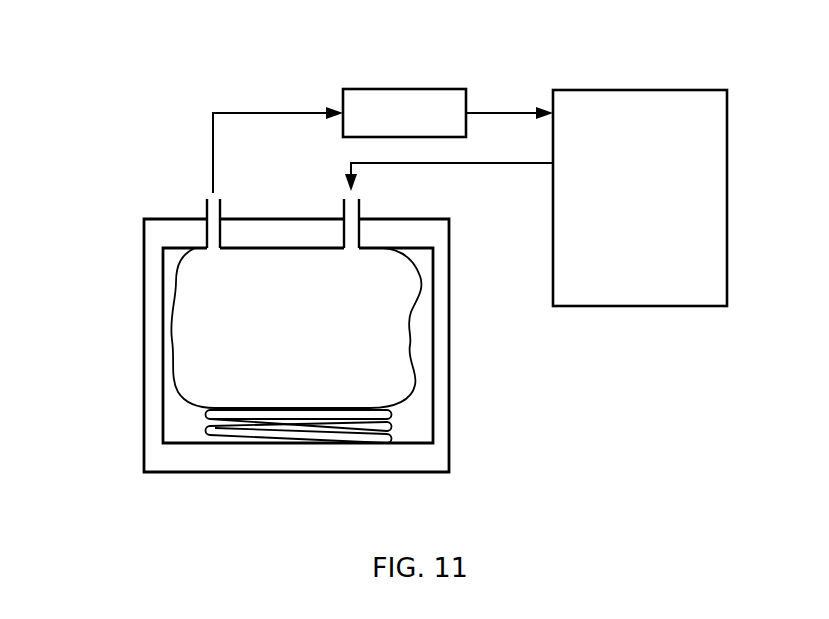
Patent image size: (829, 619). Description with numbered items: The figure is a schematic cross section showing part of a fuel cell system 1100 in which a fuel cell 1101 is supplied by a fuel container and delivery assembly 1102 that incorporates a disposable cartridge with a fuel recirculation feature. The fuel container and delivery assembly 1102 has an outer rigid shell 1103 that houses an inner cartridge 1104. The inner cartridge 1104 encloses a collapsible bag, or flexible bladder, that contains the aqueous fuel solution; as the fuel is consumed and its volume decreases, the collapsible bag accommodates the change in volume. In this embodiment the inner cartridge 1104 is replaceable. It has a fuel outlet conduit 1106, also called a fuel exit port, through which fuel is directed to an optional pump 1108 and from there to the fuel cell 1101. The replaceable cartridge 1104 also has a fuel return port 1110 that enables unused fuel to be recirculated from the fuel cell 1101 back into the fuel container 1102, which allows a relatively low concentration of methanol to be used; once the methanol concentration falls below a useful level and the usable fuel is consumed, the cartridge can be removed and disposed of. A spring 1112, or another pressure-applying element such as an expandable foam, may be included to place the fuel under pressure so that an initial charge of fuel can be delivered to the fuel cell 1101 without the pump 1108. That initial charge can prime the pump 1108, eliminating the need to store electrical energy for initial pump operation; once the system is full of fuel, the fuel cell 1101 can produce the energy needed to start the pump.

The fuel cell system 1100 is at (528, 38).
The fuel cell 1101 is at (639, 90).
The fuel container and delivery assembly 1102 is at (143, 289).
The outer rigid shell 1103 is at (449, 455).
The inner cartridge 1104 is at (412, 342).
The fuel outlet conduit 1106 is at (205, 210).
The pump 1108 is at (407, 89).
The fuel return port 1110 is at (343, 210).
The spring 1112 is at (288, 433).